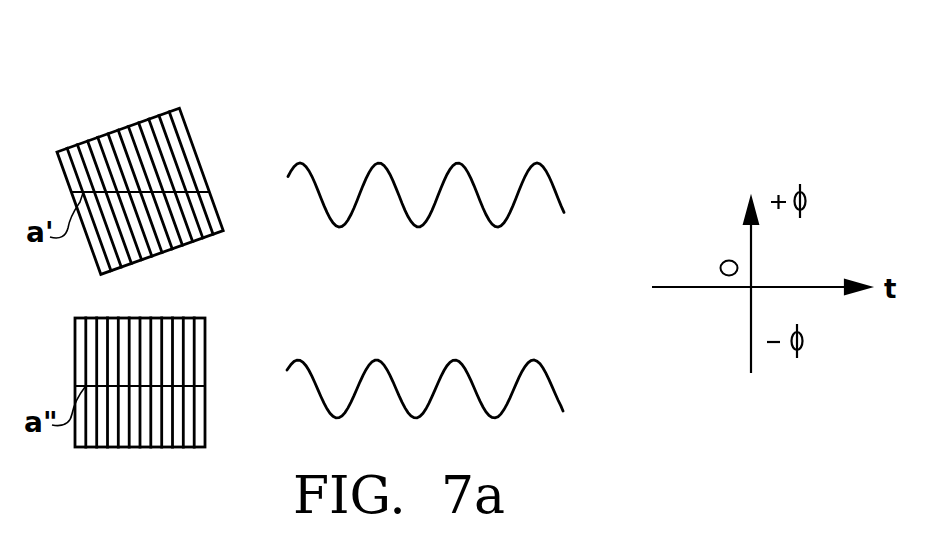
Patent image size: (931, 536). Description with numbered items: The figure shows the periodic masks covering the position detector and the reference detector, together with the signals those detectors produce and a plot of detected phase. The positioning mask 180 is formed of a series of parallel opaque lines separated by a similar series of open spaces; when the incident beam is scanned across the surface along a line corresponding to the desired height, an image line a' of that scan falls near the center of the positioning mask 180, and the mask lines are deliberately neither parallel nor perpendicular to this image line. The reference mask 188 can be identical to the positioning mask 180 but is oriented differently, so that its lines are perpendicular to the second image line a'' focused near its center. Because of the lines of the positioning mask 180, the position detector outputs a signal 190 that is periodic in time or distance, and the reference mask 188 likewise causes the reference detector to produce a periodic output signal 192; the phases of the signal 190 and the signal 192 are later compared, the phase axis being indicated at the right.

The positioning mask 180 is at (189, 132).
The reference mask 188 is at (182, 316).
The signal 190 is at (382, 163).
The periodic output signal 192 is at (380, 360).